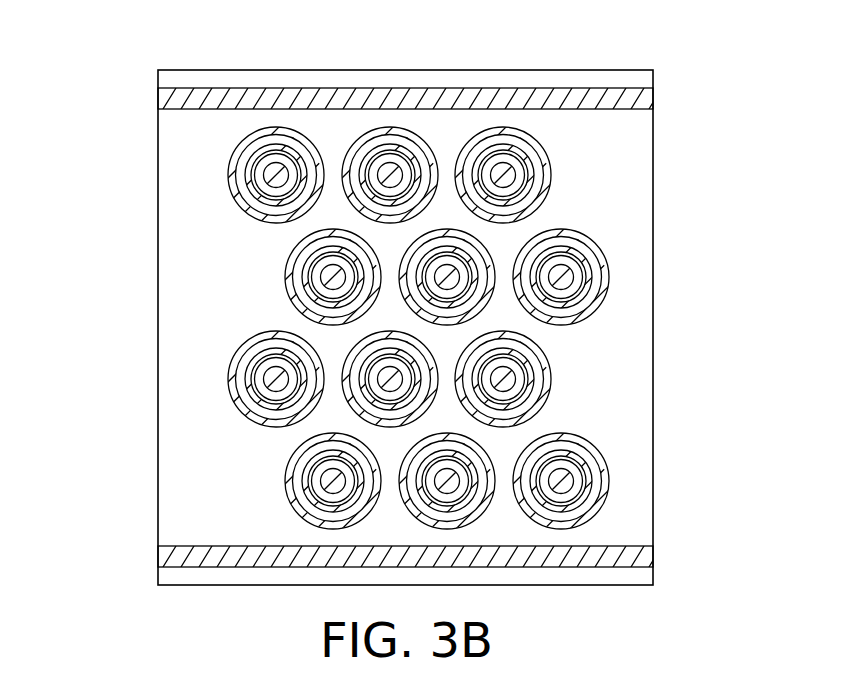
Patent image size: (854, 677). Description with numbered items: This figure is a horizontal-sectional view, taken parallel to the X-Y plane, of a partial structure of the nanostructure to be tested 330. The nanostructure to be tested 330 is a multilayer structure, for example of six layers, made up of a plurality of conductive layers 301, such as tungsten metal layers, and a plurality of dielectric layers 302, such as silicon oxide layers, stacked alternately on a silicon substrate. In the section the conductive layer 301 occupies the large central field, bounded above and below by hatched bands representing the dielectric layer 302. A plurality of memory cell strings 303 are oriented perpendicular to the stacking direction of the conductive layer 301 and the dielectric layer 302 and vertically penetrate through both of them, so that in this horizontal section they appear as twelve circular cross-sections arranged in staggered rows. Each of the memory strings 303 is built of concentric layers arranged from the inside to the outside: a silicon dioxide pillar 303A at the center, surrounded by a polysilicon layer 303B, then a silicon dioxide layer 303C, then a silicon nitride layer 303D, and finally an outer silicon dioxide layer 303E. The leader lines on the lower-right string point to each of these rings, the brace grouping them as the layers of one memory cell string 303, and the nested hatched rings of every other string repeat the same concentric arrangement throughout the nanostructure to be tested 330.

The nanostructure to be tested 330 is at (93, 47).
The conductive layer 301 is at (645, 135).
The dielectric layer 302 is at (645, 97).
The memory cell string 303 is at (497, 401).
The silicon dioxide pillar 303A is at (650, 499).
The polysilicon layer 303B is at (645, 480).
The silicon dioxide layer 303C is at (611, 545).
The silicon nitride layer 303D is at (639, 444).
The silicon dioxide layer 303E is at (611, 502).